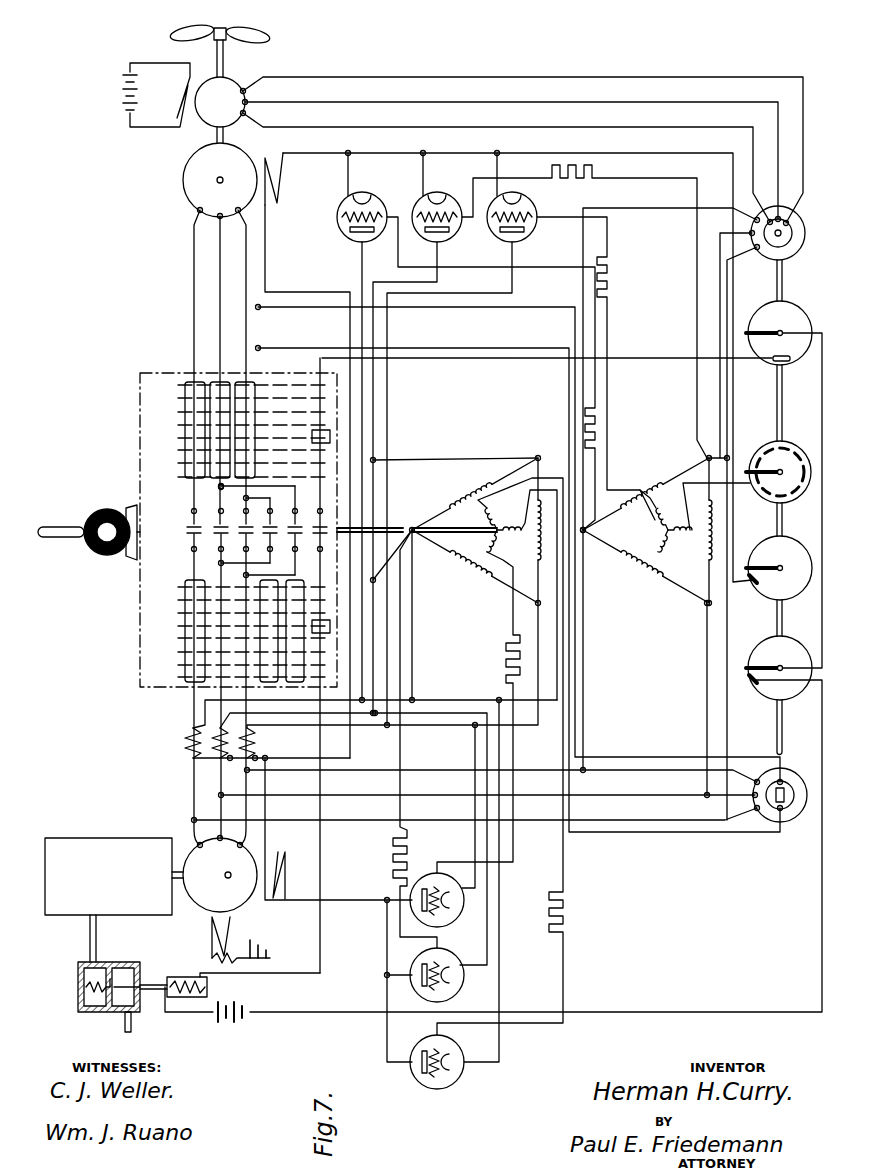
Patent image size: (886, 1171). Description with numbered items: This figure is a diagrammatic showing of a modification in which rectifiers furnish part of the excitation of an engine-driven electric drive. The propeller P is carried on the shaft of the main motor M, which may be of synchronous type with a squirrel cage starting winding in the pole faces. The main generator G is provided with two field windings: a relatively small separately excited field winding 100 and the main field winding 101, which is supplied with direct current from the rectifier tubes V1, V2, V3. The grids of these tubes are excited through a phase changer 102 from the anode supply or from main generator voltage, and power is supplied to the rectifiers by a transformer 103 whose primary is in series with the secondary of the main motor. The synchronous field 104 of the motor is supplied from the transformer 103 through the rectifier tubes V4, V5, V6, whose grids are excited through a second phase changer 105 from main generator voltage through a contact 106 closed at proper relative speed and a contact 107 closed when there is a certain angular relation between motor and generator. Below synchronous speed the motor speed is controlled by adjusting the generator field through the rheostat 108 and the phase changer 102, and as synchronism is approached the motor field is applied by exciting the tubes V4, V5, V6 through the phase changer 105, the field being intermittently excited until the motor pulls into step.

The propeller P is at (270, 36).
The main motor M is at (206, 189).
The main generator G is at (214, 866).
The rectifier tube V1 is at (450, 1085).
The rectifier tube V2 is at (455, 995).
The rectifier tube V3 is at (455, 920).
The rectifier tube V4 is at (342, 205).
The rectifier tube V5 is at (417, 200).
The rectifier tube V6 is at (492, 206).
The separately excited field winding 100 is at (232, 920).
The main field winding 101 is at (283, 903).
The phase changer 102 is at (468, 580).
The transformer 103 is at (181, 735).
The synchronous field 104 is at (292, 175).
The phase changer 105 is at (658, 595).
The contact 106 is at (750, 555).
The contact 107 is at (748, 455).
The rheostat 108 is at (212, 957).